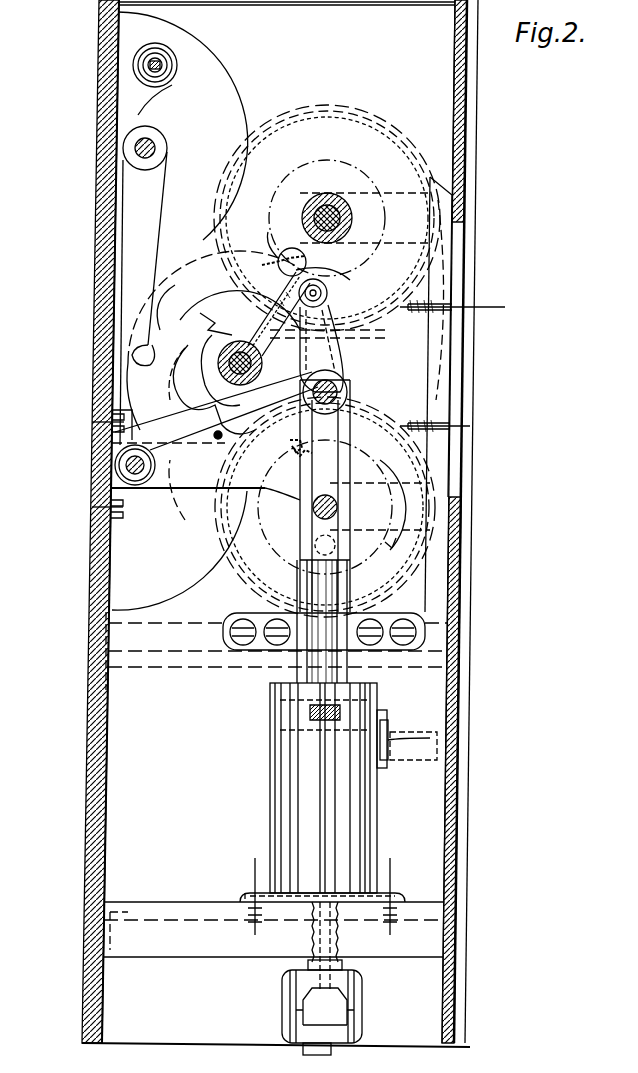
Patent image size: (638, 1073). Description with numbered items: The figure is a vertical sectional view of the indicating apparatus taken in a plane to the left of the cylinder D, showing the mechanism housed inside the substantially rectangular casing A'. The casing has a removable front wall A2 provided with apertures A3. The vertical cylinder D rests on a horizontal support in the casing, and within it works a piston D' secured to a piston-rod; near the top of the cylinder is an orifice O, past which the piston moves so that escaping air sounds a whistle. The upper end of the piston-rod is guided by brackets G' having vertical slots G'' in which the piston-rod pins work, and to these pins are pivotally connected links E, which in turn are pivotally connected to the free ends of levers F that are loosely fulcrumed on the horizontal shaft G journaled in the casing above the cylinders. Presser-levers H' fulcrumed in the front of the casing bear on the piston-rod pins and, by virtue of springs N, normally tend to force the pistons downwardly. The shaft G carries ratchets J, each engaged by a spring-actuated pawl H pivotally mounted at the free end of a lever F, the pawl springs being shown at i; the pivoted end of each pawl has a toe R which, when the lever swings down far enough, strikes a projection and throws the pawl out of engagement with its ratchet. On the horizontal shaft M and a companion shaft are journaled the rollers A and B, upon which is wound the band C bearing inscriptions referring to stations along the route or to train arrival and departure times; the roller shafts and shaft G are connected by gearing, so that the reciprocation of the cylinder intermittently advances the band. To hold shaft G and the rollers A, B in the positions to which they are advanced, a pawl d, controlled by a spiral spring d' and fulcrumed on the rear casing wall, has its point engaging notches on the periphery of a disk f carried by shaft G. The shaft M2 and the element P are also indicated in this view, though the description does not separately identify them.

The casing A' is at (248, 523).
The roller A is at (327, 218).
The front wall A2 is at (468, 193).
The apertures A3 is at (460, 222).
The gear shaft M2 is at (336, 195).
The toe R is at (301, 254).
The lever F is at (339, 287).
The band C is at (420, 292).
The links E is at (340, 352).
The horizontal shaft G is at (279, 321).
The ratchets J is at (231, 370).
The pawl H is at (206, 311).
The springs i is at (188, 318).
The disk f is at (135, 355).
The presser-levers H' is at (205, 389).
The pawl d is at (150, 285).
The spiral spring d' is at (155, 80).
The brackets G' is at (216, 448).
The springs N is at (158, 505).
The roller B is at (325, 507).
The vertical slots G'' is at (325, 491).
The horizontal shaft M is at (338, 512).
The piston D' is at (324, 645).
The orifice O is at (388, 735).
The switch plate P is at (412, 759).
The vertical cylinder D is at (327, 869).